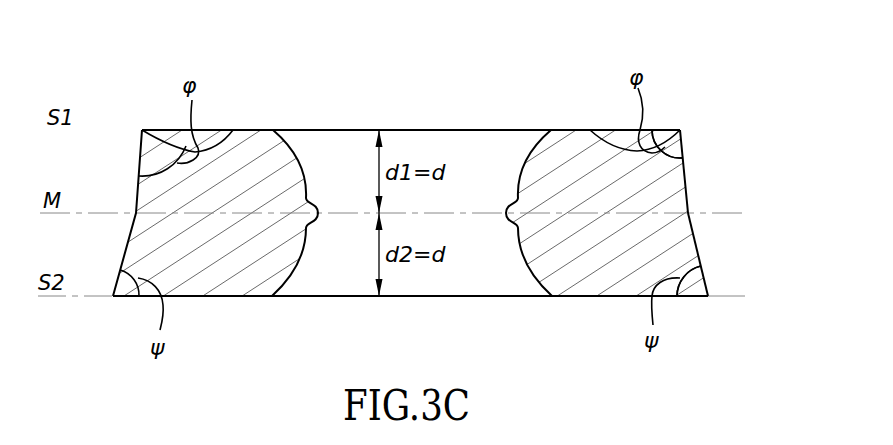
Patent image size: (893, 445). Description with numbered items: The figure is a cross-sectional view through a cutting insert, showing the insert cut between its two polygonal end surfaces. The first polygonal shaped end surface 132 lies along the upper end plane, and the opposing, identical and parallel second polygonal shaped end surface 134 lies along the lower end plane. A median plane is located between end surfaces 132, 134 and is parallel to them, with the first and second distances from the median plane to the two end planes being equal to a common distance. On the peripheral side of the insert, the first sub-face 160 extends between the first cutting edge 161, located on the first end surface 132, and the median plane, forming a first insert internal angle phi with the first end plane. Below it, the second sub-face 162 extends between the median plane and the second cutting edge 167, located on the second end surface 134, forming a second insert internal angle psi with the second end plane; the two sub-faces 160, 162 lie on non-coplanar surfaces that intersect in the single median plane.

The first polygonal shaped end surface 132 is at (412, 130).
The second polygonal shaped end surface 134 is at (327, 296).
The first sub-face 160 is at (685, 177).
The first cutting edge 161 is at (680, 130).
The second sub-face 162 is at (697, 242).
The second cutting edge 167 is at (708, 297).